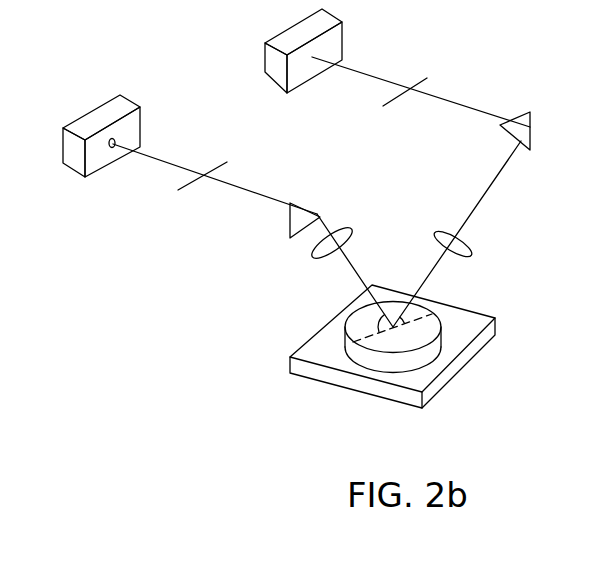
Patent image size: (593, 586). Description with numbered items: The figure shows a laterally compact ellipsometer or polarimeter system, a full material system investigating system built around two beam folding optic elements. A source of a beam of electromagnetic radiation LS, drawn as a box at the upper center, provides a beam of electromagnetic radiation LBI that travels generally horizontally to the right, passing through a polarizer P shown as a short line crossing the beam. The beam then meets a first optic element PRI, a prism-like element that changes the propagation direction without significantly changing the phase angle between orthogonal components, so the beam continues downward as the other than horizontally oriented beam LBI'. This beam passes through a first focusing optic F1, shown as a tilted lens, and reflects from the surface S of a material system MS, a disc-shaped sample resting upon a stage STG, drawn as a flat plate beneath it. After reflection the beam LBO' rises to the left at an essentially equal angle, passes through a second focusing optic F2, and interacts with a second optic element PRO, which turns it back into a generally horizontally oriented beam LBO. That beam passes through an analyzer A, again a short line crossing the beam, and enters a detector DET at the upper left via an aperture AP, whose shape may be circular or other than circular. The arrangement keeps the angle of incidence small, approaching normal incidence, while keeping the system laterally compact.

The detector DET is at (97, 100).
The aperture AP is at (112, 148).
The source of a beam of electromagnetic radiation LS is at (262, 78).
The generally horizontally oriented output beam of electromagnetic radiation LBO is at (215, 192).
The analyzer A is at (233, 157).
The second optic element PRO is at (320, 212).
The other than horizontally oriented output beam of electromagnetic radiation LBO' is at (307, 270).
The second focusing optic F2 is at (310, 253).
The beam of electromagnetic radiation LBI is at (438, 89).
The polarizer P is at (425, 78).
The first optic element PRI is at (536, 131).
The other than horizontally oriented input beam of electromagnetic radiation LBI' is at (453, 234).
The first focusing optic F1 is at (473, 250).
The surface of the sample system S is at (430, 322).
The material system MS is at (425, 357).
The stage STG is at (365, 398).